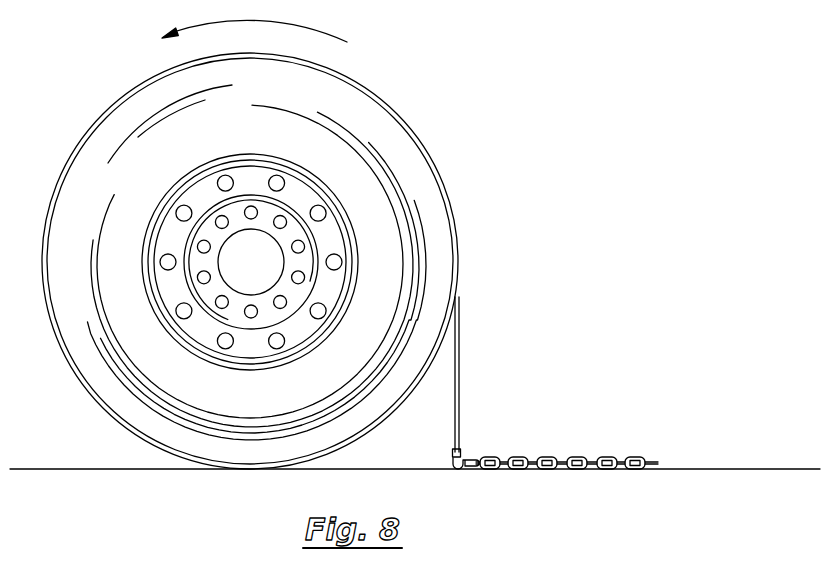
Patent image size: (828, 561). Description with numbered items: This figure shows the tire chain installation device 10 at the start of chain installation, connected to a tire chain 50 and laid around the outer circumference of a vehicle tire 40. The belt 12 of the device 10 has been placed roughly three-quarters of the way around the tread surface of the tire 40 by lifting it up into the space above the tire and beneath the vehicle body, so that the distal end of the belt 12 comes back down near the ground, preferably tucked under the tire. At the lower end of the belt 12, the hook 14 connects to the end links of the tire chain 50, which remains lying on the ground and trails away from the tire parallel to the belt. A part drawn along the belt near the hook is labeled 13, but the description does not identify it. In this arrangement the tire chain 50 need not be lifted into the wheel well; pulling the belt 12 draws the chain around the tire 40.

The tire chain installation device 10 is at (524, 383).
The belt 12 is at (130, 90).
The strap 13 is at (455, 427).
The hook 14 is at (462, 455).
The vehicle tire 40 is at (402, 149).
The tire chain 50 is at (547, 463).